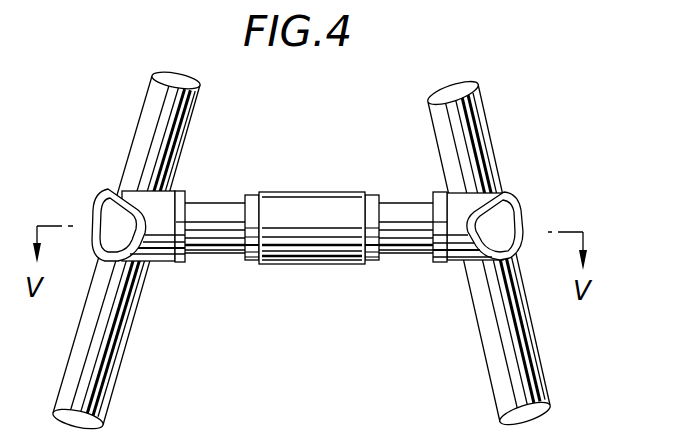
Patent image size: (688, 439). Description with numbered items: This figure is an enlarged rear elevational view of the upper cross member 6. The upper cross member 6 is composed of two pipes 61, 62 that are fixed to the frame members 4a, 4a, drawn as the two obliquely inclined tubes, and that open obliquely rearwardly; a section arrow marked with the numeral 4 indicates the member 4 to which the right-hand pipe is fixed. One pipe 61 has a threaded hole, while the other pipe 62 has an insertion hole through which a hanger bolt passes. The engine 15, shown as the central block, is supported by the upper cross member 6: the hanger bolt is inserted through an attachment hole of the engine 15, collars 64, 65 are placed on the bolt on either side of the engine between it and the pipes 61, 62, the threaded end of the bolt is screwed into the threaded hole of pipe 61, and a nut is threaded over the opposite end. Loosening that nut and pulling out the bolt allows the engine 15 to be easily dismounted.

The member 4 is at (548, 330).
The members 4a is at (152, 127).
The upper cross member 6 is at (297, 152).
The engine 15 is at (340, 202).
The pipe 61 is at (142, 197).
The pipe 62 is at (462, 203).
The collar 64 is at (224, 240).
The collar 65 is at (413, 240).